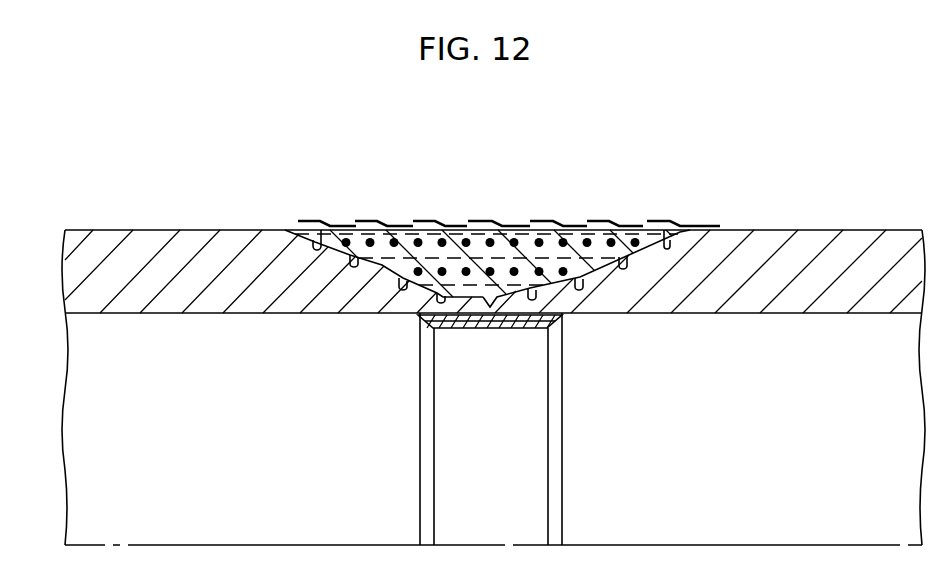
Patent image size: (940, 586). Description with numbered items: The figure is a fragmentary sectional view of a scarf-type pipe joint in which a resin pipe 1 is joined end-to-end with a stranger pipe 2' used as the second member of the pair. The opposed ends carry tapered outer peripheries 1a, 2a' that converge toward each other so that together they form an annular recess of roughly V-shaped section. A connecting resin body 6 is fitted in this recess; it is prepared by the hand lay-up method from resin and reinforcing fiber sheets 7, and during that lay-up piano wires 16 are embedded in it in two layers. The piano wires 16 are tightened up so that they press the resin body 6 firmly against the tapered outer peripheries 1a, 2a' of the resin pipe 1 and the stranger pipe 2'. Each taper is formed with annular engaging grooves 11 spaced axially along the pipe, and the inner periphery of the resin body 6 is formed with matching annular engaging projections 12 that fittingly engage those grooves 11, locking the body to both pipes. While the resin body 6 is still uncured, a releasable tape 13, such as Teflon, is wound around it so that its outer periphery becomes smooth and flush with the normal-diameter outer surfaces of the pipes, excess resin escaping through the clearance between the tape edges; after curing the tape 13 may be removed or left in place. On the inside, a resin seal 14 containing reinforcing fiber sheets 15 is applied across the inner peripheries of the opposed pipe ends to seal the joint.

The resin pipe 1 is at (135, 257).
The stranger pipe 2' is at (710, 350).
The tapered outer periphery 1a is at (384, 266).
The tapered outer periphery 2a' is at (586, 300).
The connecting resin body 6 is at (620, 253).
The reinforcing fiber sheets 7 is at (466, 238).
The piano wires 16 is at (568, 266).
The annular engaging grooves 11 is at (318, 252).
The annular engaging projections 12 is at (318, 230).
The releasable tape 13 is at (387, 224).
The resin seal 14 is at (420, 318).
The reinforcing fiber sheets 15 is at (504, 328).